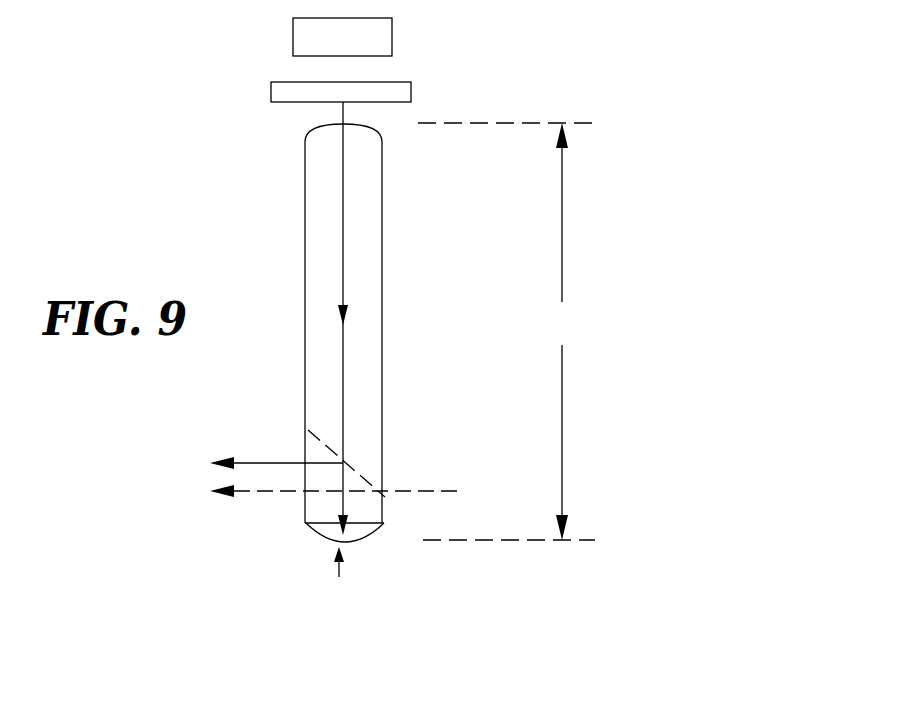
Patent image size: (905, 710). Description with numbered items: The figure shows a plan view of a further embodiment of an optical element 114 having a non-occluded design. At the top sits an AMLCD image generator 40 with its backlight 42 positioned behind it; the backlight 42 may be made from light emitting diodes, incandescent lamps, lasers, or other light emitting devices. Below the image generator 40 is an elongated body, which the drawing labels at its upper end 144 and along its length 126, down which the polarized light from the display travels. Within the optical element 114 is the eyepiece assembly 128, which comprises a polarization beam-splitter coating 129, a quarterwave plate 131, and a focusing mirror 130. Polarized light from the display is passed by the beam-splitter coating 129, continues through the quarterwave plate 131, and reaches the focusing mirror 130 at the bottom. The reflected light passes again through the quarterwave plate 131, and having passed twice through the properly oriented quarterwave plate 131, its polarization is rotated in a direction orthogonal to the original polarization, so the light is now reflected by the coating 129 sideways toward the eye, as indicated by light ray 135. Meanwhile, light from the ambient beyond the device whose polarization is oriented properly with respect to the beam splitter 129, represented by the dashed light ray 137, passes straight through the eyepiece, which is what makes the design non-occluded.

The backlight 42 is at (298, 33).
The AMLCD image generator 40 is at (271, 90).
The tube top end 144 is at (313, 132).
The tube 126 is at (363, 263).
The polarization beam-splitter coating 129 is at (356, 473).
The light ray 135 is at (275, 463).
The light ray 137 is at (423, 491).
The optical element 114 is at (506, 331).
The focusing mirror 130 is at (317, 538).
The quarterwave plate 131 is at (370, 528).
The eyepiece assembly 128 is at (339, 577).